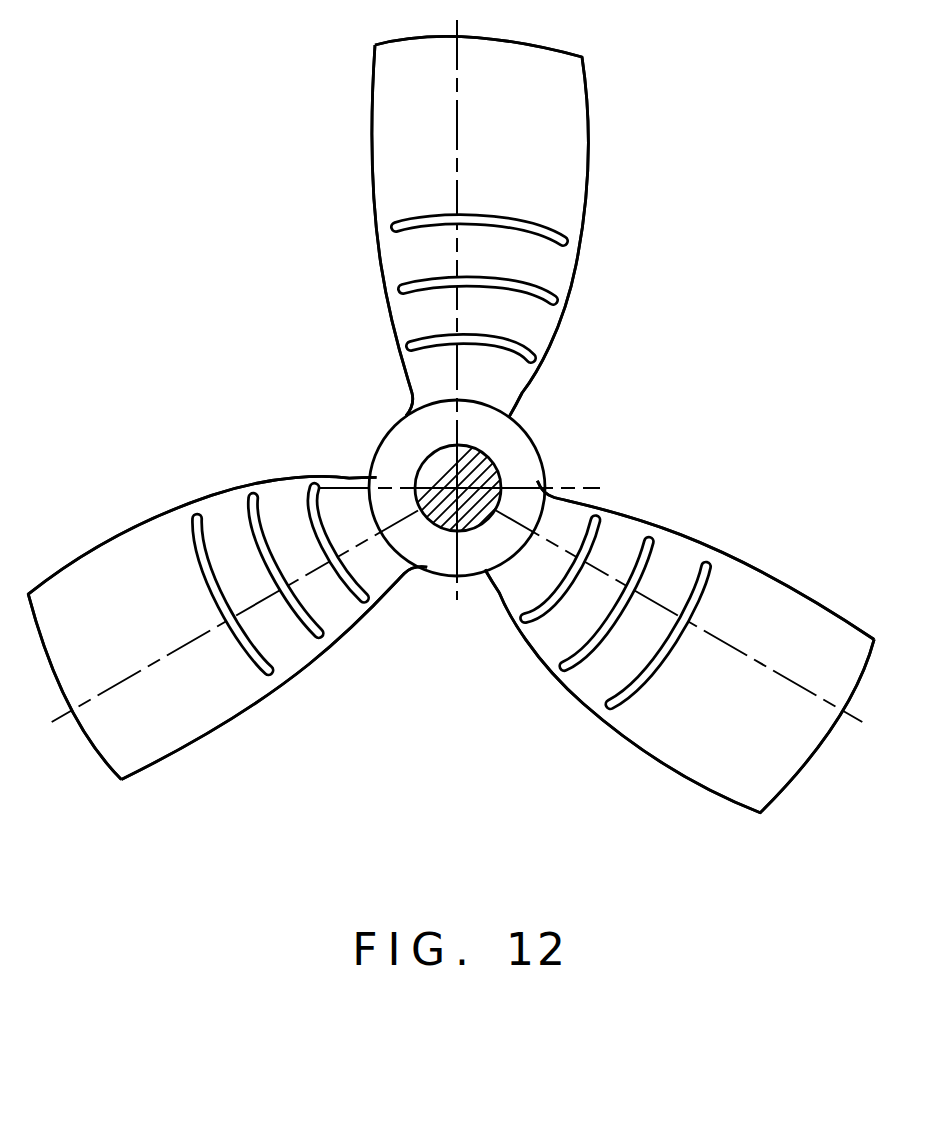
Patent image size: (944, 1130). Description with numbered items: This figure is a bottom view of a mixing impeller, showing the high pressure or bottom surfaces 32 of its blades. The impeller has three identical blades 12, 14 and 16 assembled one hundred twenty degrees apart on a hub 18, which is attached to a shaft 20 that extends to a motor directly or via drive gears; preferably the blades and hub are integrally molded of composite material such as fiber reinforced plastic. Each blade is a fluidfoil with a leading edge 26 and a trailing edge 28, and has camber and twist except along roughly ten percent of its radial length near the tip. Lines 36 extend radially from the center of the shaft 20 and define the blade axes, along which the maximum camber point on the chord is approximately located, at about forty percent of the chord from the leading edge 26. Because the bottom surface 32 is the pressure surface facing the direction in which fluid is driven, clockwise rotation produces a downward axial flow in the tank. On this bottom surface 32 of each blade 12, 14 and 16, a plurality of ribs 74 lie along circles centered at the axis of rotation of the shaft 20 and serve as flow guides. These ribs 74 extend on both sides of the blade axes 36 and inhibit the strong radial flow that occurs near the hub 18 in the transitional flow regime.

The blade 12 is at (92, 565).
The blade 14 is at (545, 332).
The blade 16 is at (790, 603).
The hub 18 is at (542, 460).
The shaft 20 is at (415, 518).
The leading edge 26 is at (375, 272).
The trailing edge 28 is at (583, 208).
The bottom surface 32 is at (567, 120).
The blade axis 36 is at (462, 130).
The ribs 74 is at (427, 346).